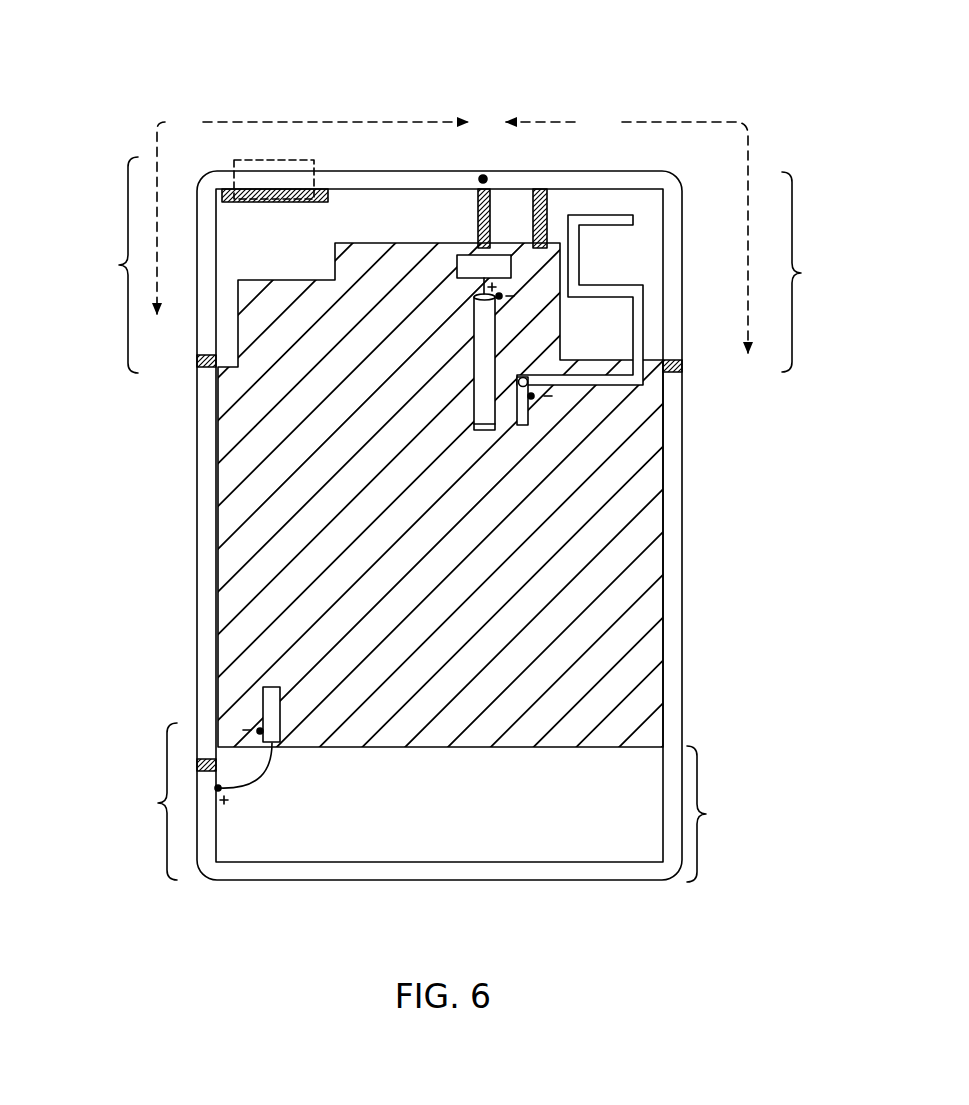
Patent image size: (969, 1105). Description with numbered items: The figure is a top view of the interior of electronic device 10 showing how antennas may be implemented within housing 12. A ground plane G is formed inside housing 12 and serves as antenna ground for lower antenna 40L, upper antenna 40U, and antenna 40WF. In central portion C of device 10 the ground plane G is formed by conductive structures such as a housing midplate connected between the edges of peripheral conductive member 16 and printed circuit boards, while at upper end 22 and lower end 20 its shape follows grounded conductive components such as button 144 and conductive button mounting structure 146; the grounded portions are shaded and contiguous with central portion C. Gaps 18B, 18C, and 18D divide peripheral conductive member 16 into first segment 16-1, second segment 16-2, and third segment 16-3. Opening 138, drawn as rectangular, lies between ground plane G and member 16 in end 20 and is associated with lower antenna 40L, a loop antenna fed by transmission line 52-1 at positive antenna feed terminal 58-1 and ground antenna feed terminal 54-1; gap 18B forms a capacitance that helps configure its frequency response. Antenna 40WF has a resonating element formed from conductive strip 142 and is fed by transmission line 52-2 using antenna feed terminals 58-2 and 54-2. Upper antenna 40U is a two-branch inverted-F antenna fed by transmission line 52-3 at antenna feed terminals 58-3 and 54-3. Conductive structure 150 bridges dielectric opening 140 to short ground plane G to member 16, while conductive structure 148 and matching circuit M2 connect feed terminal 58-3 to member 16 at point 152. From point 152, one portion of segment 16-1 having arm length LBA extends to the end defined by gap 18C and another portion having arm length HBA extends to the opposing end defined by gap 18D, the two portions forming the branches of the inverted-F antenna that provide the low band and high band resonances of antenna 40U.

The electronic device 10 is at (668, 55).
The housing 12 is at (682, 493).
The peripheral conductive member 16 is at (682, 675).
The first segment 16-1 is at (417, 178).
The second segment 16-2 is at (205, 608).
The third segment 16-3 is at (593, 870).
The gap 18B is at (198, 768).
The gap 18C is at (197, 362).
The gap 18D is at (682, 366).
The end 20 is at (152, 801).
The end 22 is at (806, 272).
The upper antenna 40U is at (105, 265).
The lower antenna 40L is at (720, 814).
The antenna 40WF is at (648, 268).
The transmission line 52-1 is at (268, 702).
The transmission line 52-2 is at (527, 418).
The transmission line 52-3 is at (480, 363).
The ground antenna feed terminal 54-1 is at (260, 731).
The antenna feed terminal 54-2 is at (531, 396).
The antenna feed terminal 54-3 is at (502, 296).
The positive antenna feed terminal 58-1 is at (219, 789).
The antenna feed terminal 58-2 is at (528, 382).
The antenna feed terminal 58-3 is at (485, 287).
The opening 138 is at (386, 845).
The dielectric opening 140 is at (381, 203).
The strip 142 is at (601, 222).
The button 144 is at (258, 160).
The conductive button mounting structure 146 is at (328, 199).
The conductive structure 148 is at (478, 215).
The conductive structure 150 is at (548, 210).
The point 152 is at (483, 178).
The central portion C is at (265, 519).
The ground plane G is at (651, 570).
The matching circuit M2 is at (484, 266).
The arm length LBA is at (312, 212).
The arm length HBA is at (627, 231).